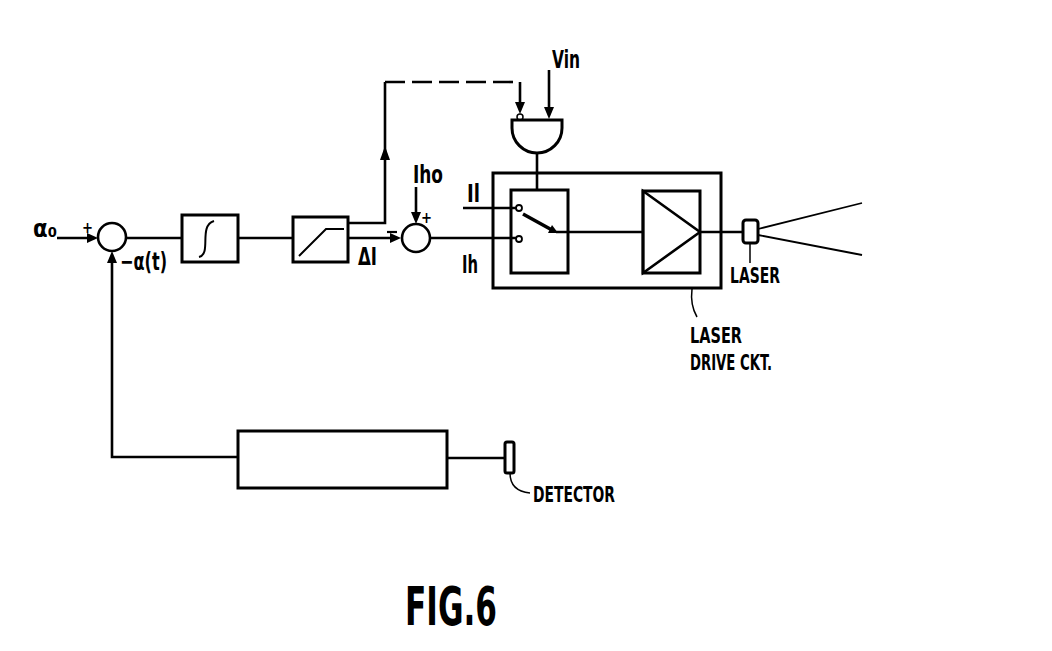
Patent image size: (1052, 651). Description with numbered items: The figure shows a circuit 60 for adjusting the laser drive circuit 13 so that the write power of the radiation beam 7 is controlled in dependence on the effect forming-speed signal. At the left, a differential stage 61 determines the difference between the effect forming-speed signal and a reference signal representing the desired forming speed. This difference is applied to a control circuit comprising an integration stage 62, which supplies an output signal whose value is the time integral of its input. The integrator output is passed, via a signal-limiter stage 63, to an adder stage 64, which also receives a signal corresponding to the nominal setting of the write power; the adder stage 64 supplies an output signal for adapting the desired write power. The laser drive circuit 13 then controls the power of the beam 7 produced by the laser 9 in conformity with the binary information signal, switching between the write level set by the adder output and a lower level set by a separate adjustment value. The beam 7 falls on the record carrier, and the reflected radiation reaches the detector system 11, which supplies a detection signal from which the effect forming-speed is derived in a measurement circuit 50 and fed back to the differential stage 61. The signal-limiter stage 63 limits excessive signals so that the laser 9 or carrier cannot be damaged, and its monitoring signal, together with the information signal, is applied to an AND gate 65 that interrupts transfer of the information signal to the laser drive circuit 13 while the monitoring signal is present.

The circuit 60 is at (789, 146).
The differential stage 61 is at (116, 228).
The integration stage 62 is at (207, 217).
The signal-limiter stage 63 is at (333, 263).
The adder stage 64 is at (417, 253).
The AND gate 65 is at (556, 131).
The laser drive circuit 13 is at (645, 289).
The laser 9 is at (754, 222).
The radiation beam 7 is at (820, 233).
The measurement circuit 50 is at (400, 489).
The detector system 11 is at (514, 455).